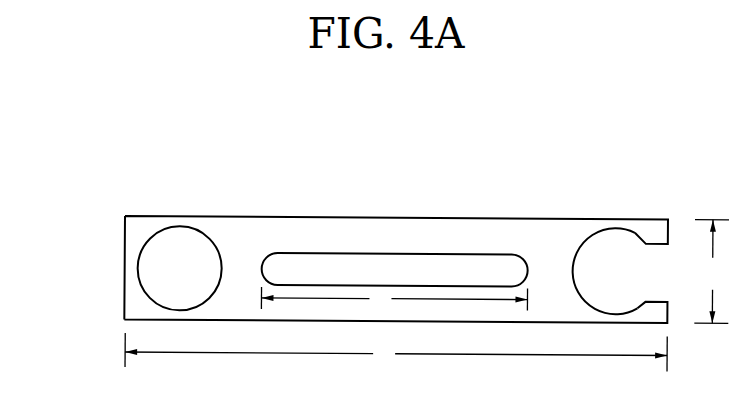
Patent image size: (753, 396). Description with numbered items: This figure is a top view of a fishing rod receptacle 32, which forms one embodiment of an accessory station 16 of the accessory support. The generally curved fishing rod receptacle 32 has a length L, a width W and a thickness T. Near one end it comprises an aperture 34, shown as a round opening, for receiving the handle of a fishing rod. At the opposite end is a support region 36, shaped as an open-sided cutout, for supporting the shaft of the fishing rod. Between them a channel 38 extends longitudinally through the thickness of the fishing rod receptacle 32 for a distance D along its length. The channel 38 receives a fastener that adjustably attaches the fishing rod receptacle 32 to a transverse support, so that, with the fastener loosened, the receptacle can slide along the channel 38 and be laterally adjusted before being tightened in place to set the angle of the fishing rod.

The accessory station 16 is at (562, 101).
The fishing rod receptacle 32 is at (385, 206).
The aperture 34 is at (162, 271).
The support region 36 is at (617, 231).
The channel 38 is at (325, 268).